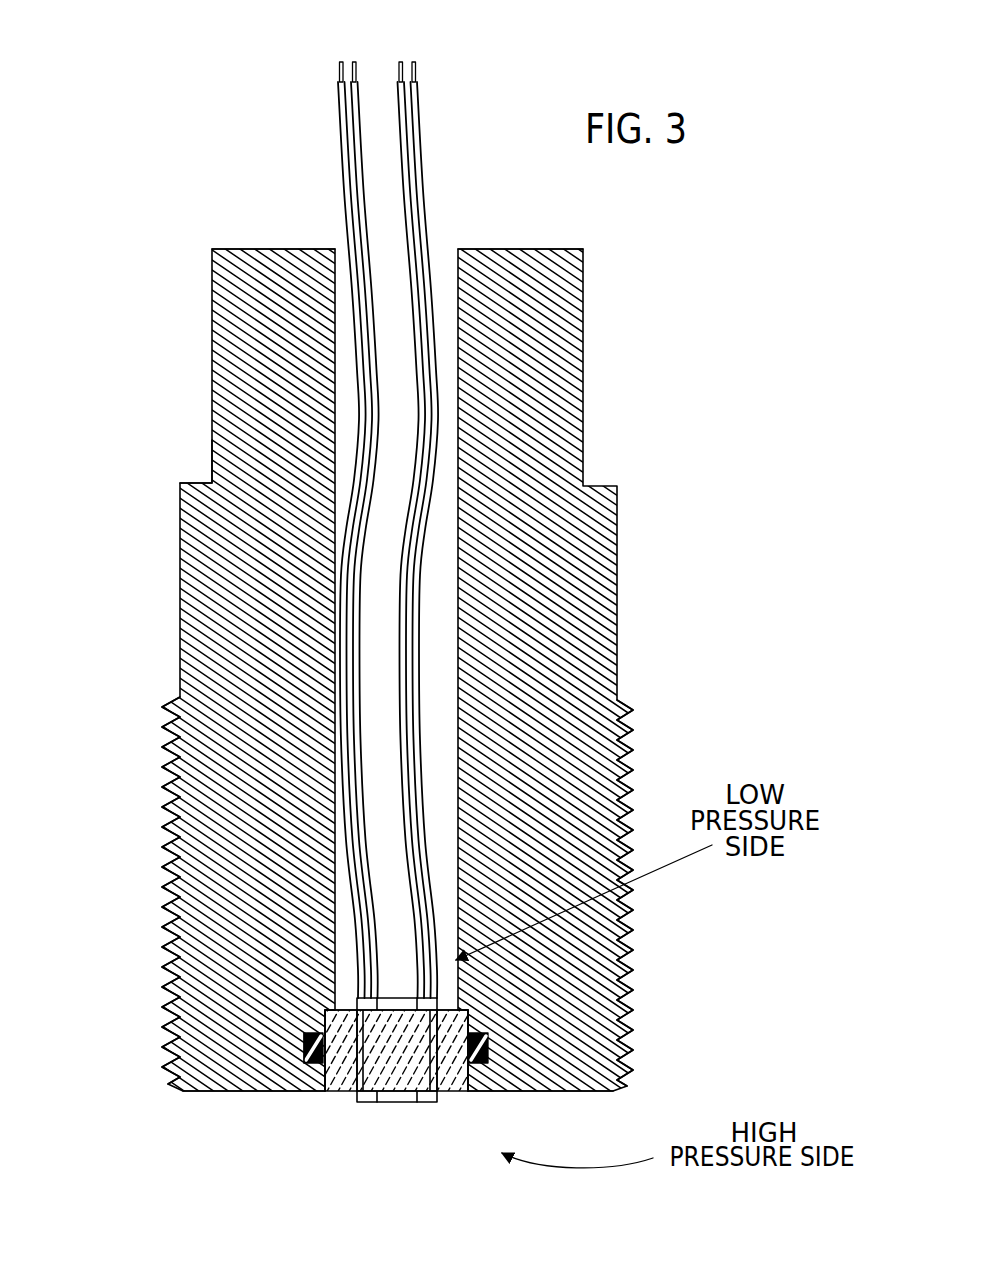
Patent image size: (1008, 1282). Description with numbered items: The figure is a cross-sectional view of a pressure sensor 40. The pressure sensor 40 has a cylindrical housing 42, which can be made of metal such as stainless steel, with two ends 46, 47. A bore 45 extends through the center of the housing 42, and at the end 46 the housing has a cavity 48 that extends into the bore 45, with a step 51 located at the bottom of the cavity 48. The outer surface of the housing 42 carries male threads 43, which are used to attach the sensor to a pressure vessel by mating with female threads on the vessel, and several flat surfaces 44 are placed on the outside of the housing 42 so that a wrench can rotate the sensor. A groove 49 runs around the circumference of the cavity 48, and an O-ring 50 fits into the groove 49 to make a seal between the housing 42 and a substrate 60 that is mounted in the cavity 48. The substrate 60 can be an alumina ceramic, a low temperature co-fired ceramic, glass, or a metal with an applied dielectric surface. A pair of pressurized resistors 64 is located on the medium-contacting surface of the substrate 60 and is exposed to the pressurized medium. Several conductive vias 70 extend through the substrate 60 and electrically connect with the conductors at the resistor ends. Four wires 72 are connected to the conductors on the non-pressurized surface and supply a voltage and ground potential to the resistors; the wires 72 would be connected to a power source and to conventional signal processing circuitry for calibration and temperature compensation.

The pressure sensor 40 is at (376, 641).
The cylindrical housing 42 is at (179, 562).
The male threads 43 is at (172, 757).
The flat surfaces 44 is at (212, 405).
The bore 45 is at (445, 263).
The end 46 is at (200, 1092).
The end 47 is at (245, 249).
The cavity 48 is at (324, 1014).
The groove 49 is at (302, 1059).
The O-ring 50 is at (317, 1060).
The step 51 is at (330, 1008).
The substrate 60 is at (340, 1091).
The pressurized resistors 64 is at (403, 1103).
The conductive vias 70 is at (440, 1070).
The wires 72 is at (353, 63).